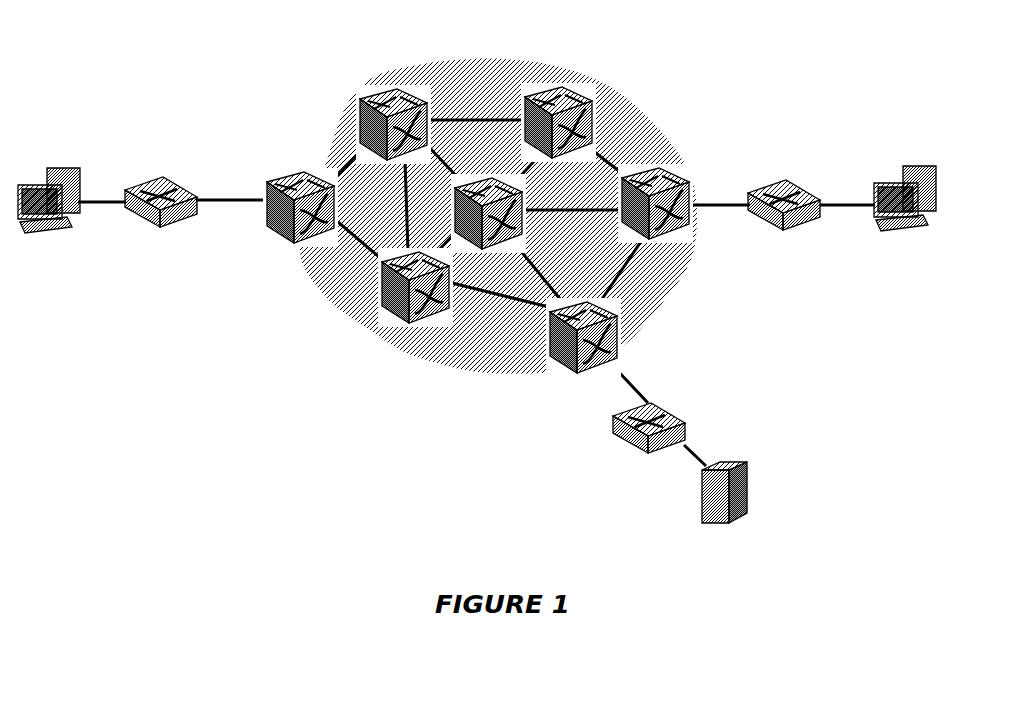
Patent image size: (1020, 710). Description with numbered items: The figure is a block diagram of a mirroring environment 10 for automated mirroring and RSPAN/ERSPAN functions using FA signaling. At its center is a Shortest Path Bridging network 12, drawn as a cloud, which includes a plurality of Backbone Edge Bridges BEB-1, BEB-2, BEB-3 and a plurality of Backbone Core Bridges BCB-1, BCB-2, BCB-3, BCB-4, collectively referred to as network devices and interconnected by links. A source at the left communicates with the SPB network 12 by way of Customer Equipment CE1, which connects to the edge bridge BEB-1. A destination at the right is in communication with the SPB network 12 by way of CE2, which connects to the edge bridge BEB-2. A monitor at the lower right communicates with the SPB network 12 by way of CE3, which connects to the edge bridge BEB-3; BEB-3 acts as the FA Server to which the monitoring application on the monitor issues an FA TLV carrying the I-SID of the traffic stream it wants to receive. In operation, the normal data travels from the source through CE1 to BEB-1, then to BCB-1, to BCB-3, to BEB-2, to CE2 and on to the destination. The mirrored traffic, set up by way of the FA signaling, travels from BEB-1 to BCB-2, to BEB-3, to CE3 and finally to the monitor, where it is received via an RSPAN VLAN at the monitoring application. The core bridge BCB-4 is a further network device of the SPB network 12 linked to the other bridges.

The mirroring environment 10 is at (476, 285).
The Shortest Path Bridging network 12 is at (464, 216).
The Backbone Edge Bridge BEB-1 is at (300, 199).
The Backbone Edge Bridge BEB-2 is at (657, 196).
The Backbone Edge Bridge BEB-3 is at (569, 342).
The Backbone Core Bridge BCB-1 is at (406, 124).
The Backbone Core Bridge BCB-2 is at (416, 294).
The Backbone Core Bridge BCB-3 is at (488, 208).
The Backbone Core Bridge BCB-4 is at (558, 129).
The Customer Equipment CE1 is at (161, 194).
The Customer Equipment CE2 is at (784, 198).
The Customer Equipment CE3 is at (648, 435).